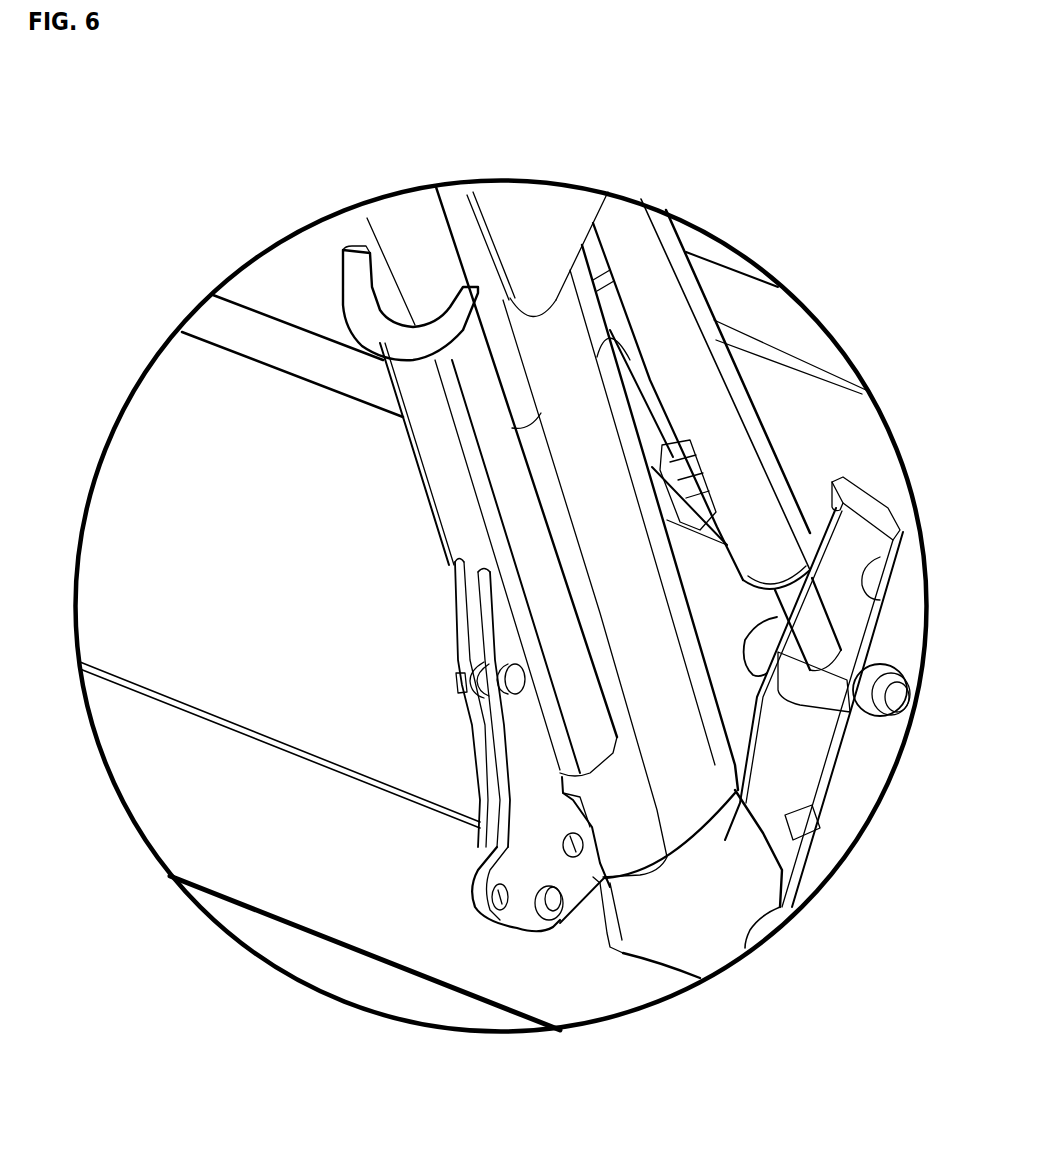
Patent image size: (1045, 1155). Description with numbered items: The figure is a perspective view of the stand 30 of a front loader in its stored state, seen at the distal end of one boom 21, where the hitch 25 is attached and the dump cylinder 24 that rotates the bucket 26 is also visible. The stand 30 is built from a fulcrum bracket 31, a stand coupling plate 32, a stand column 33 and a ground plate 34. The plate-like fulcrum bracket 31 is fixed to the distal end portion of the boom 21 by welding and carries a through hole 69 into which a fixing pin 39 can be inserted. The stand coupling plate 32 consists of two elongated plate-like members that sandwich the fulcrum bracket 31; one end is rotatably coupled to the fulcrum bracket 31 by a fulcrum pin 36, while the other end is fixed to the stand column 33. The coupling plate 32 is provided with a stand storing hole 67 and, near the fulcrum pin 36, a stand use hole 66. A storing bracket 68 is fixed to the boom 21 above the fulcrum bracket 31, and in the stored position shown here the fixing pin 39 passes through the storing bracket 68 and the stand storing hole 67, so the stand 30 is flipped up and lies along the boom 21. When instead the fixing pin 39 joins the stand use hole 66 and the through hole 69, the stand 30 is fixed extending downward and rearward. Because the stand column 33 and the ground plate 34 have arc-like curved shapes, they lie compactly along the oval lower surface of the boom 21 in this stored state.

The boom 21 is at (687, 783).
The dump cylinder 24 is at (748, 407).
The hitch 25 is at (867, 783).
The bucket 26 is at (290, 928).
The stand 30 is at (388, 557).
The fulcrum bracket 31 is at (473, 887).
The stand coupling plate 32 is at (480, 793).
The stand column 33 is at (430, 447).
The ground plate 34 is at (353, 293).
The fulcrum pin 36 is at (560, 923).
The fixing pin 39 is at (522, 683).
The stand use hole 66 is at (583, 860).
The stand storing hole 67 is at (500, 672).
The storing bracket 68 is at (472, 673).
The through hole 69 is at (490, 895).